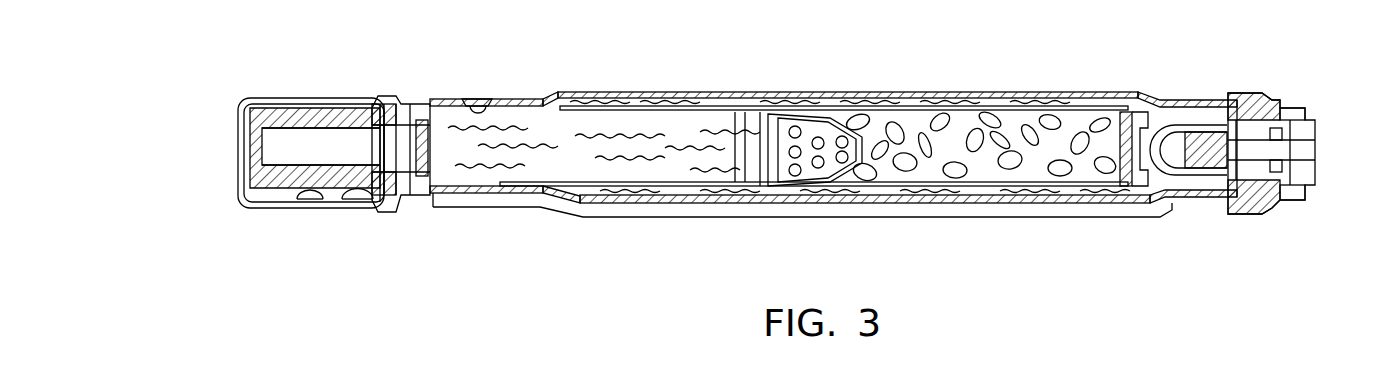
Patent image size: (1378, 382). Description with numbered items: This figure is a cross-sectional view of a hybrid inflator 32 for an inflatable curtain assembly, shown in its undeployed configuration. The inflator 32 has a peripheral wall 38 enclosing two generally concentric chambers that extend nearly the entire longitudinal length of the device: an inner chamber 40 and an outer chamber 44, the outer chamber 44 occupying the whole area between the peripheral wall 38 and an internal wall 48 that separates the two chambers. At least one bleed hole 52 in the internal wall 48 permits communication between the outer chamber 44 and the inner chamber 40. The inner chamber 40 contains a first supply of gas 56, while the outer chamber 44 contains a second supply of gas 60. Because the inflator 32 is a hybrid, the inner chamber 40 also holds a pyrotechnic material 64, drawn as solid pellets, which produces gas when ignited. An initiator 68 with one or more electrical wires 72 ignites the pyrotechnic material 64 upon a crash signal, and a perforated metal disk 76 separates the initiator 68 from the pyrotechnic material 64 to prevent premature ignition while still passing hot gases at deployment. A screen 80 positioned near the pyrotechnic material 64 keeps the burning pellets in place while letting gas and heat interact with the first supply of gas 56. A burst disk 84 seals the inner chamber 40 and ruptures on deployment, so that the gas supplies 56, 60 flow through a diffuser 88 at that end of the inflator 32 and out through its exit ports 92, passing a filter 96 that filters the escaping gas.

The inflator 32 is at (763, 218).
The peripheral wall 38 is at (703, 92).
The inner chamber 40 is at (567, 163).
The outer chamber 44 is at (750, 106).
The internal wall 48 is at (594, 110).
The bleed hole 52 is at (707, 206).
The first supply of gas 56 is at (548, 110).
The second supply of gas 60 is at (650, 108).
The pyrotechnic material 64 is at (1080, 180).
The initiator 68 is at (1213, 110).
The electrical wires 72 is at (1313, 150).
The perforated metal disk 76 is at (1137, 110).
The screen 80 is at (808, 114).
The burst disk 84 is at (442, 108).
The diffuser 88 is at (238, 127).
The exit ports 92 is at (353, 200).
The filter 96 is at (310, 175).